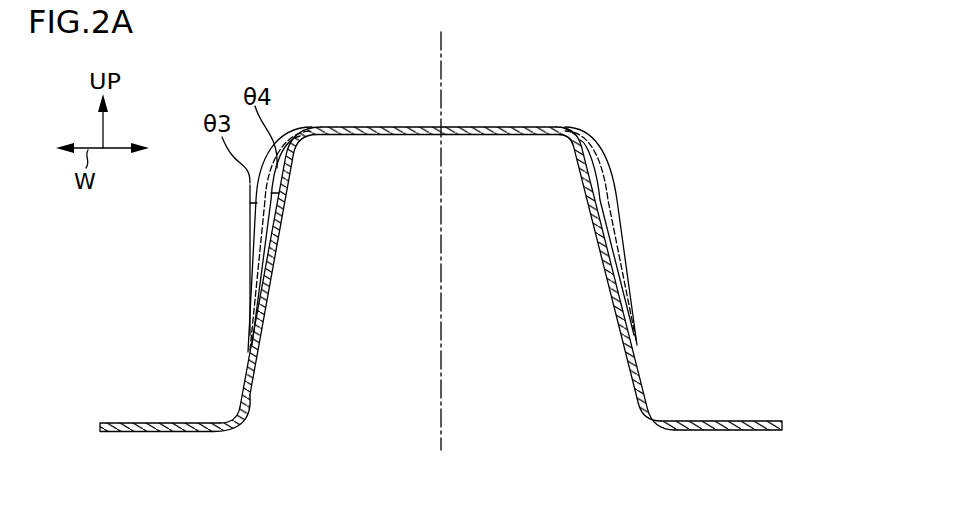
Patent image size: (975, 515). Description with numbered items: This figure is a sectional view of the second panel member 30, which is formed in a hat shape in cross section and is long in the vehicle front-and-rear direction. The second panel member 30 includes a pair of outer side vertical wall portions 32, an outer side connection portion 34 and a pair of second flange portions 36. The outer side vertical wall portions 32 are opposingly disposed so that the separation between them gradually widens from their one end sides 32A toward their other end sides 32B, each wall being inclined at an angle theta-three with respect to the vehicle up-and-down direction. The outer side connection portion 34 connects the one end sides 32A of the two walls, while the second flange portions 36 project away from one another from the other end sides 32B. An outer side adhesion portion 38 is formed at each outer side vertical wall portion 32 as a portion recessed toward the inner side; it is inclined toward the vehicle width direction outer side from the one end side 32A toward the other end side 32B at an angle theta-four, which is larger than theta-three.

The second panel member 30 is at (712, 86).
The outer side vertical wall portion 32 is at (248, 320).
The one end side 32A is at (287, 140).
The other end side 32B is at (228, 413).
The outer side connection portion 34 is at (483, 126).
The second flange portion 36 is at (122, 422).
The outer side adhesion portion 38 is at (288, 228).